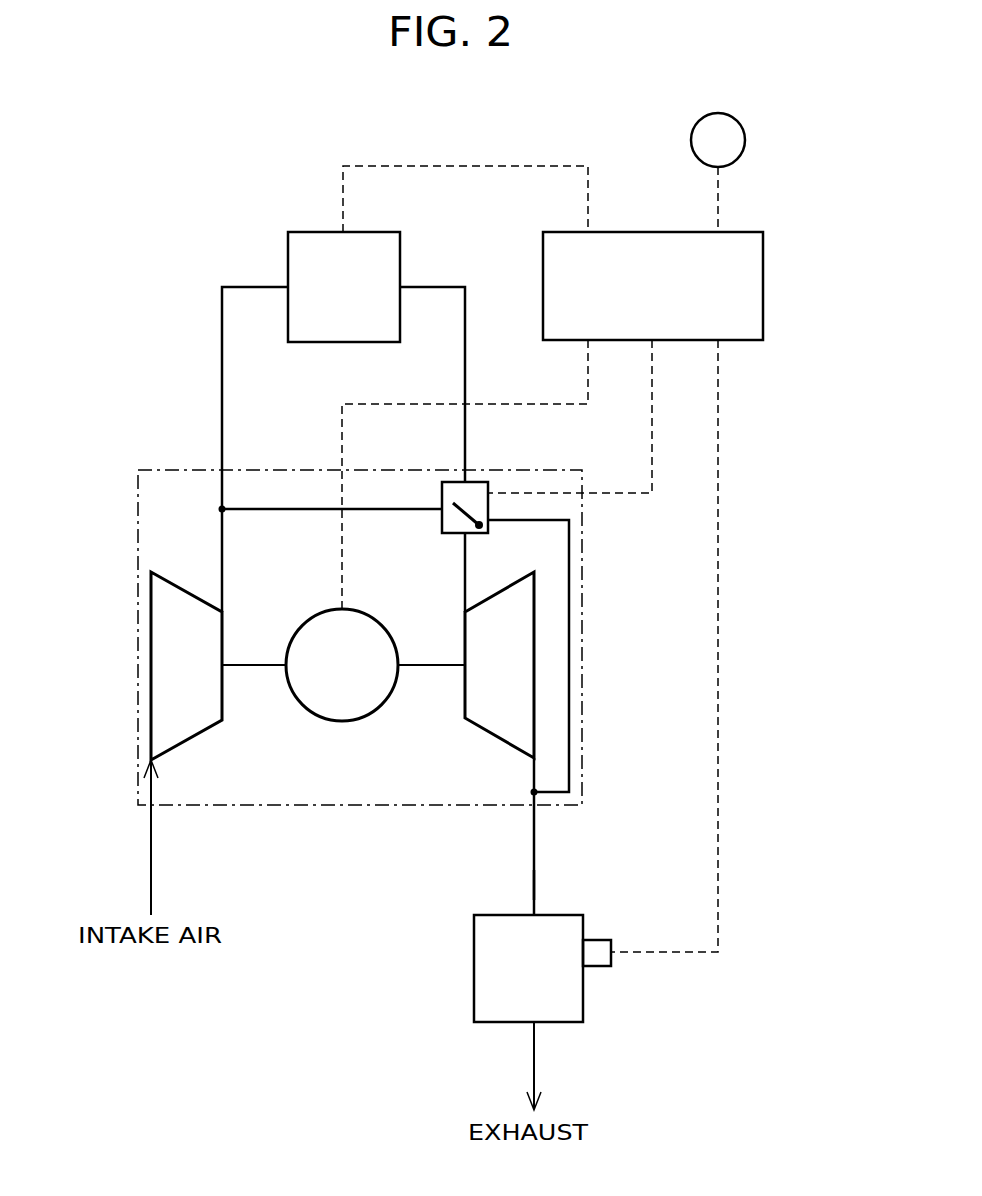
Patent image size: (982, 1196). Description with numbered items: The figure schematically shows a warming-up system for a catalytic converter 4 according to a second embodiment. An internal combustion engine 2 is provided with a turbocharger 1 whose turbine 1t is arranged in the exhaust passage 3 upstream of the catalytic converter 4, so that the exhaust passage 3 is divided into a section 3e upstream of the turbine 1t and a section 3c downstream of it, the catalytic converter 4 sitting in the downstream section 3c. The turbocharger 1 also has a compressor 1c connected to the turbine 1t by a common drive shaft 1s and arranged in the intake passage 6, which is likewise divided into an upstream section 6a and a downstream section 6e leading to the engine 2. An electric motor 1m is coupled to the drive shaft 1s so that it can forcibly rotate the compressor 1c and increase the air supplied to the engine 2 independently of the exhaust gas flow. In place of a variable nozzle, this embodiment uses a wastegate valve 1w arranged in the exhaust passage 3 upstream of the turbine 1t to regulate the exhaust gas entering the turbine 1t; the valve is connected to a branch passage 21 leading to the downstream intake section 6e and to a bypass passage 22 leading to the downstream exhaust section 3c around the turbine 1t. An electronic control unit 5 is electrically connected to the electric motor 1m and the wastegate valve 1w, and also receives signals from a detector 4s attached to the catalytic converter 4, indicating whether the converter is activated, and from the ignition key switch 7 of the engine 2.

The turbocharger 1 is at (138, 492).
The compressor 1c is at (181, 588).
The turbine 1t is at (512, 588).
The drive shaft 1s is at (254, 668).
The electric motor 1m is at (342, 722).
The wastegate valve 1w is at (442, 527).
The engine 2 is at (312, 232).
The exhaust passage 3 is at (540, 838).
The upstream section of exhaust passage 3e is at (465, 368).
The downstream section of exhaust passage 3c is at (534, 862).
The catalytic converter 4 is at (474, 930).
The detector 4s is at (600, 957).
The electronic control unit 5 is at (763, 250).
The intake passage 6 is at (146, 833).
The downstream section of intake passage 6e is at (222, 372).
The upstream section of intake passage 6a is at (151, 862).
The ignition key switch 7 is at (740, 135).
The branch passage 21 is at (284, 512).
The bypass passage 22 is at (569, 613).